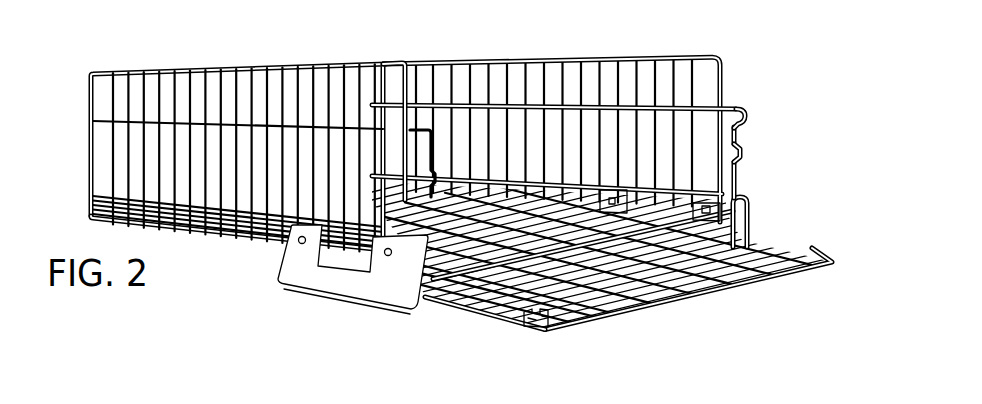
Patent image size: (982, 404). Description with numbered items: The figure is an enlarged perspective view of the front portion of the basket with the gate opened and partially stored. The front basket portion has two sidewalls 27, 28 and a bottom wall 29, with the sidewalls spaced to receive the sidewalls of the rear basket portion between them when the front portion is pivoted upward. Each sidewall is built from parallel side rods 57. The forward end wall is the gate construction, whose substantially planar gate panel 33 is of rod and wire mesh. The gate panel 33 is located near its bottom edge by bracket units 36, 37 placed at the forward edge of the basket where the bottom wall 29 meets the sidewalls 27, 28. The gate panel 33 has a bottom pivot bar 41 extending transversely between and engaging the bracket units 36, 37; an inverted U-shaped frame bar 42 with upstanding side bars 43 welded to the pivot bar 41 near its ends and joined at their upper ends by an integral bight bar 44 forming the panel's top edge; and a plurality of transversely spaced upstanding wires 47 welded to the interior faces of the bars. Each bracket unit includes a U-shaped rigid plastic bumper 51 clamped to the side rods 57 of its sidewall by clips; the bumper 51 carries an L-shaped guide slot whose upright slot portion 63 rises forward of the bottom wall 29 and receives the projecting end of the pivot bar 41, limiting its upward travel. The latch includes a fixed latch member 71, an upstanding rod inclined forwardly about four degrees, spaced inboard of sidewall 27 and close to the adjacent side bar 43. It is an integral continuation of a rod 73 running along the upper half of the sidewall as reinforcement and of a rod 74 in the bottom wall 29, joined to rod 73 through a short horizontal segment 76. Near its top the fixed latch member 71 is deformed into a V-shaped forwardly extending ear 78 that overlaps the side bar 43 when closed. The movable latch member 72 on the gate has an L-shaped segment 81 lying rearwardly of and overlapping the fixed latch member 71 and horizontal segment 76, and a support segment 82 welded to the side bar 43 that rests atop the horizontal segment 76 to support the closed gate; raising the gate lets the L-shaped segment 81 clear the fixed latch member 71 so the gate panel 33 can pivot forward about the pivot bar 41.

The sidewall 27 is at (208, 185).
The sidewall 28 is at (596, 52).
The bottom wall 29 is at (232, 254).
The gate panel 33 is at (474, 225).
The bracket unit 36 is at (353, 285).
The bracket unit 37 is at (762, 192).
The pivot bar 41 is at (452, 281).
The frame bar 42 is at (631, 320).
The side bar 43 is at (497, 320).
The bight bar 44 is at (696, 293).
The upstanding wires 47 is at (668, 292).
The bumper 51 is at (378, 296).
The side rods 57 is at (533, 84).
The upright slot portion 63 is at (746, 226).
The fixed latch member 71 is at (433, 136).
The movable latch member 72 is at (556, 337).
The rod 73 is at (703, 111).
The rod 74 is at (434, 275).
The horizontal segment 76 is at (742, 114).
The ear 78 is at (742, 149).
The L-shaped segment 81 is at (534, 320).
The support segment 82 is at (550, 318).